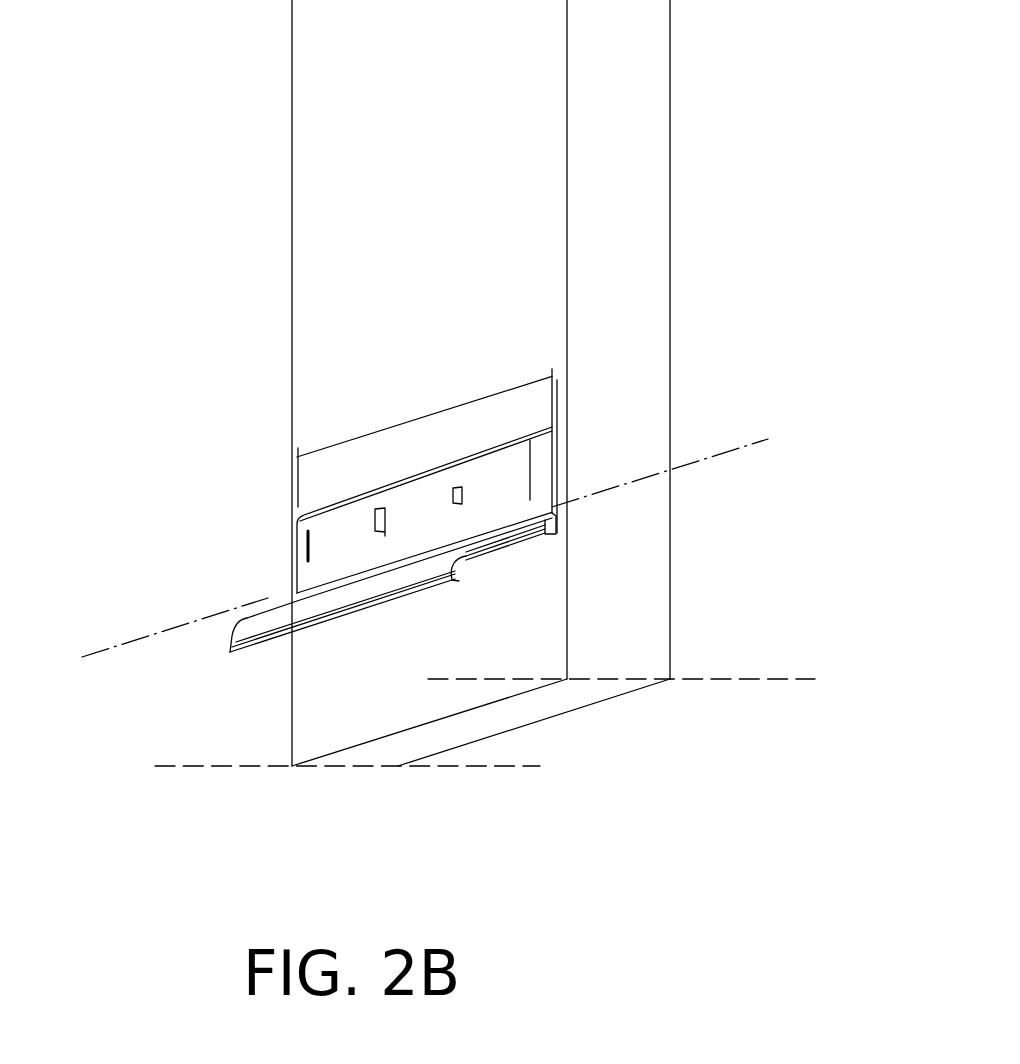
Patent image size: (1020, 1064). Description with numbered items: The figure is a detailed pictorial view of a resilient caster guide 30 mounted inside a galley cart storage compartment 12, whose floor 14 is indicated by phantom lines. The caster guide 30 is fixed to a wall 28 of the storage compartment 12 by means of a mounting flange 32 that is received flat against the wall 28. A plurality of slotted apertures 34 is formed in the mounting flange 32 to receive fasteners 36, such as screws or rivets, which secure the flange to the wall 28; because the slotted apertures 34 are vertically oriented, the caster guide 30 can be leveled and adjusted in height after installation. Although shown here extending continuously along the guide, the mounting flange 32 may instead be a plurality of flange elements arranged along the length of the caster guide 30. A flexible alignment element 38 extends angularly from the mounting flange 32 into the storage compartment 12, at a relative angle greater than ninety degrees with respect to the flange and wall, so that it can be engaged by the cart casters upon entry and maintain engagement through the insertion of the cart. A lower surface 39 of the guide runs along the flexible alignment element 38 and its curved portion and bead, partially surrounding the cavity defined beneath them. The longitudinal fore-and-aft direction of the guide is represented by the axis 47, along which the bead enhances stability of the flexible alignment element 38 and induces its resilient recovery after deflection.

The cart storage compartment 12 is at (89, 79).
The floor 14 is at (767, 679).
The wall 28 is at (437, 87).
The resilient caster guide 30 is at (364, 494).
The mounting flange 32 is at (498, 493).
The slotted apertures 34 is at (538, 487).
The fasteners 36 is at (460, 505).
The flexible alignment element 38 is at (268, 627).
The lower surface 39 is at (432, 415).
The axis 47 is at (730, 455).